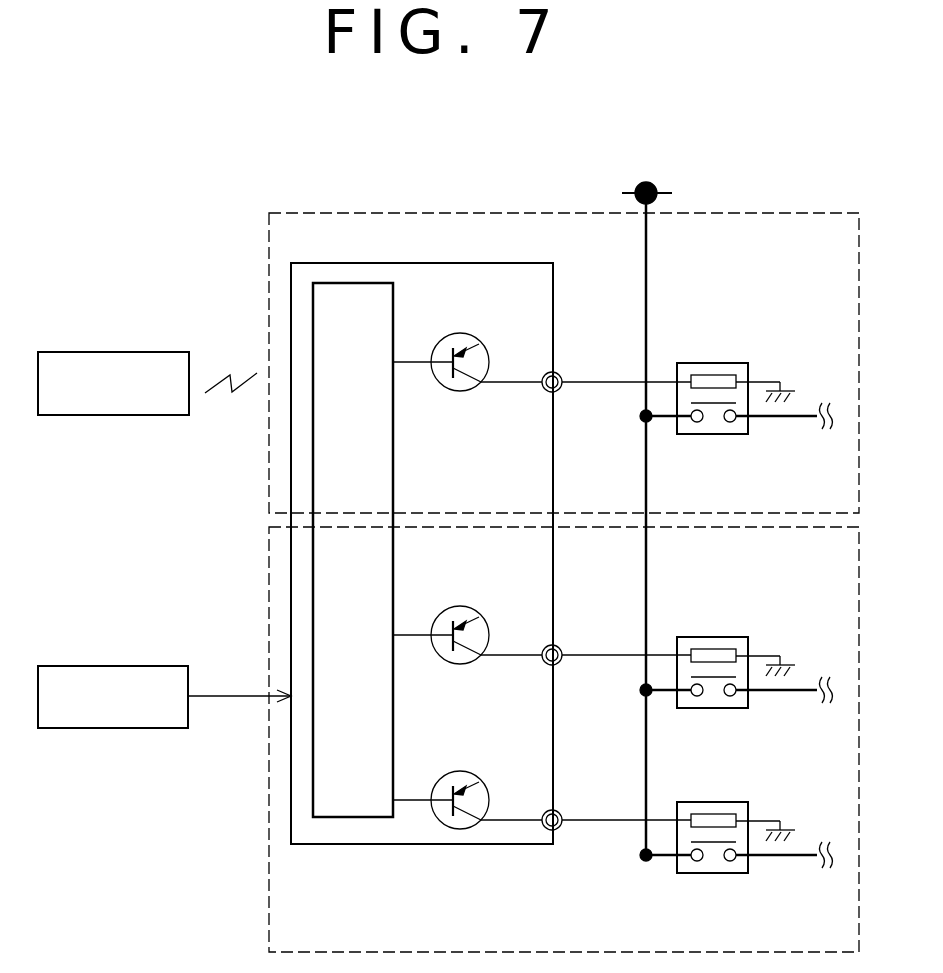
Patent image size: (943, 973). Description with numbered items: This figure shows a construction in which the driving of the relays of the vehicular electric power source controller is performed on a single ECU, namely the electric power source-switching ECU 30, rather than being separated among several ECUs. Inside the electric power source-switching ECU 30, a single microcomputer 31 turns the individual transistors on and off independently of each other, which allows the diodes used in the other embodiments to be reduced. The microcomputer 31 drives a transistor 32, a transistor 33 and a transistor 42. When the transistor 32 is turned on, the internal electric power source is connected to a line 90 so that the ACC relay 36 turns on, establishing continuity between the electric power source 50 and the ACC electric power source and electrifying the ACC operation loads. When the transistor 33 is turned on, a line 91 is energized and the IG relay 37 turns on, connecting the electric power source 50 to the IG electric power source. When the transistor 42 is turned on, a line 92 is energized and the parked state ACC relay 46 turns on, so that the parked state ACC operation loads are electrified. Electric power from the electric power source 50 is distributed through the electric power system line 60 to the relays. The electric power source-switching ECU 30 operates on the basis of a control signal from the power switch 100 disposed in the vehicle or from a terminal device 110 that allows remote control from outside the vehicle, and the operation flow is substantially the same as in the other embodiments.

The electric power source-switching ECU 30 is at (420, 845).
The microcomputer 31 is at (393, 683).
The transistor 32 is at (433, 624).
The transistor 33 is at (433, 789).
The ACC relay 36 is at (735, 708).
The IG relay 37 is at (735, 873).
The transistor 42 is at (462, 392).
The parked state ACC relay 46 is at (758, 461).
The electric power source 50 is at (656, 186).
The electric power system line 60 is at (648, 250).
The line 90 is at (620, 652).
The line 91 is at (620, 818).
The line 92 is at (582, 378).
The power switch 100 is at (160, 666).
The terminal device 110 is at (158, 352).